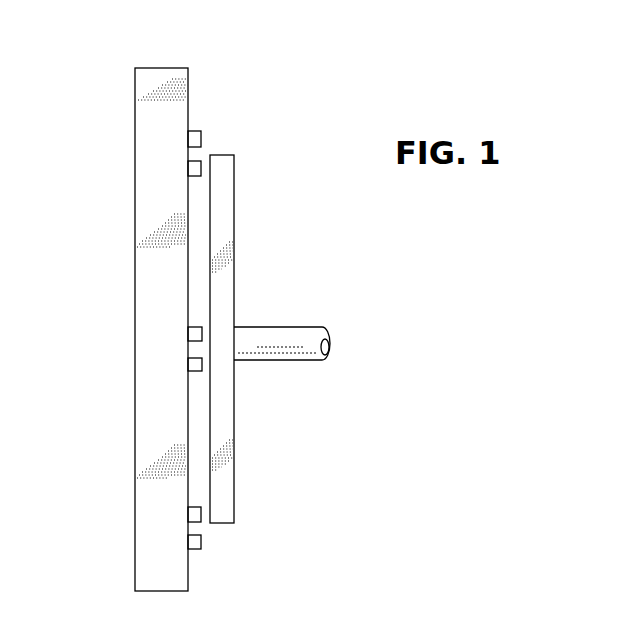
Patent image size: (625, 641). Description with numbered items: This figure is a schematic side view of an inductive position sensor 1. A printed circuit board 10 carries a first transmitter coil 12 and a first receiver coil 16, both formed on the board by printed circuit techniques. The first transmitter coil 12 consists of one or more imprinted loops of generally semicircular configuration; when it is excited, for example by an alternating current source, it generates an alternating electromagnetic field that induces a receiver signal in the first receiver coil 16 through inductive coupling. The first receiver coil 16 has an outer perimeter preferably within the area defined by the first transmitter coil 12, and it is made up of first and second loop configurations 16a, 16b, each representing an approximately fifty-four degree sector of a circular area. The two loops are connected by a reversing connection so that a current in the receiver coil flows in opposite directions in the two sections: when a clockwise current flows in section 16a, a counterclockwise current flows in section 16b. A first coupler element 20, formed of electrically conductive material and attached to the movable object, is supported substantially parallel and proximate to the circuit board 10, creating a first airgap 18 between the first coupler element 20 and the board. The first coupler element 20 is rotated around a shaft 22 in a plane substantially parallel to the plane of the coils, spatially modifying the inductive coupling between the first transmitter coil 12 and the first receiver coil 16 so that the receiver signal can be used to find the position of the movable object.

The inductive position sensor 1 is at (126, 42).
The printed circuit board 10 is at (142, 135).
The first transmitter coil 12 is at (198, 143).
The first receiver coil 16 is at (198, 169).
The first loop configuration 16a is at (190, 334).
The second loop configuration 16b is at (190, 363).
The first airgap 18 is at (198, 207).
The first coupler element 20 is at (224, 232).
The shaft 22 is at (309, 333).